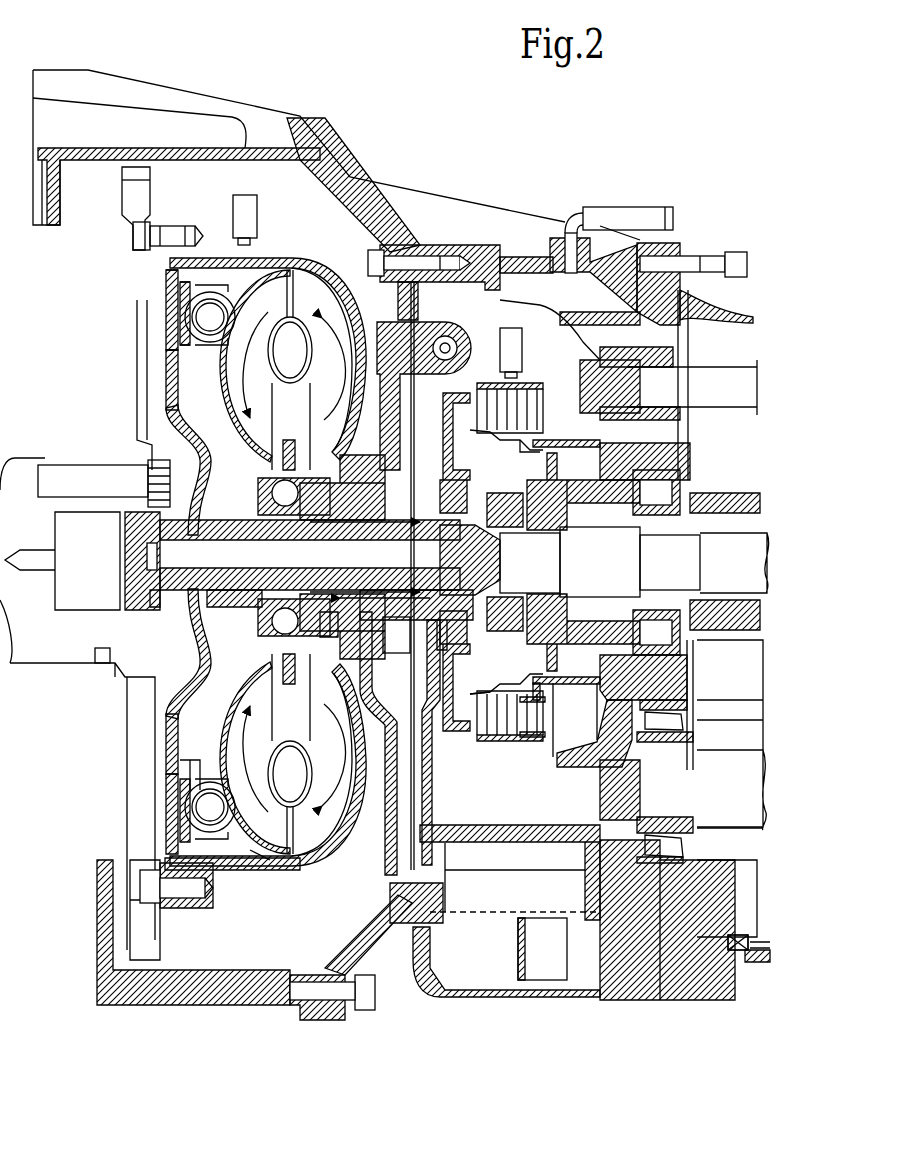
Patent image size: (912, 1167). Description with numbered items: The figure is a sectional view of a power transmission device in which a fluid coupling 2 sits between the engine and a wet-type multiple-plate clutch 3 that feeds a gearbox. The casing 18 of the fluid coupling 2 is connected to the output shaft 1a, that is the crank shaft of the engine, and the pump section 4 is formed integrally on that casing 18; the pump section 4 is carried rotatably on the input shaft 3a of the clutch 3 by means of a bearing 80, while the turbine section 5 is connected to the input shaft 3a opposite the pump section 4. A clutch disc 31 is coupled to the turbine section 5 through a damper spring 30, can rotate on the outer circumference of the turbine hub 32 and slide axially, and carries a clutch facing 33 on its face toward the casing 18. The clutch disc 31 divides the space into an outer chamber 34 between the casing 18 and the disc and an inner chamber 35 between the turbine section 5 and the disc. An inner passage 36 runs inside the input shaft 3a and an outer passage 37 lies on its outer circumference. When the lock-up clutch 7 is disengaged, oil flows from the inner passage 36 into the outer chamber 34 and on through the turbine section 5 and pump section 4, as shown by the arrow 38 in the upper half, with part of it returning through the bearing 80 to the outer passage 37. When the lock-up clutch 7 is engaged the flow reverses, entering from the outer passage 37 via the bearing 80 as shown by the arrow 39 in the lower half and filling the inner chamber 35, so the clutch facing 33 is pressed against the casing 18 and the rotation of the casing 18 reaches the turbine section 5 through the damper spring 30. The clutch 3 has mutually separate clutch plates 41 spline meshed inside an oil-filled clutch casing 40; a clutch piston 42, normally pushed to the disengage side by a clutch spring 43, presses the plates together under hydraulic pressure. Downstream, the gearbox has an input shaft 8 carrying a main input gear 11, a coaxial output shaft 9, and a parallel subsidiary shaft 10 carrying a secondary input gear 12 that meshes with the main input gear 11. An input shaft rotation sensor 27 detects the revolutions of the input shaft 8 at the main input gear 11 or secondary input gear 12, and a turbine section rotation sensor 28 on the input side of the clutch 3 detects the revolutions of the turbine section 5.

The output shaft 1a is at (23, 665).
The fluid coupling 2 is at (303, 262).
The wet-type multiple-plate clutch 3 is at (541, 382).
The input shaft 3a is at (170, 650).
The pump section 4 is at (305, 298).
The turbine section 5 is at (277, 280).
The lock-up clutch 7 is at (175, 277).
The input shaft 8 is at (683, 495).
The output shaft 9 is at (755, 583).
The subsidiary shaft 10 is at (745, 827).
The main input gear 11 is at (727, 480).
The secondary input gear 12 is at (743, 937).
The casing 18 is at (170, 333).
The input shaft rotation sensor 27 is at (247, 195).
The turbine section rotation sensor 28 is at (500, 350).
The damper spring 30 is at (218, 270).
The clutch disc 31 is at (197, 393).
The turbine hub 32 is at (203, 462).
The clutch facing 33 is at (173, 298).
The outer chamber 34 is at (180, 357).
The inner chamber 35 is at (210, 728).
The inner passage 36 is at (100, 653).
The outer passage 37 is at (335, 637).
The arrow 38 is at (260, 267).
The arrow 39 is at (314, 848).
The clutch casing 40 is at (492, 383).
The clutch plates 41 is at (530, 387).
The clutch piston 42 is at (465, 735).
The clutch spring 43 is at (505, 738).
The bearing 80 is at (330, 450).